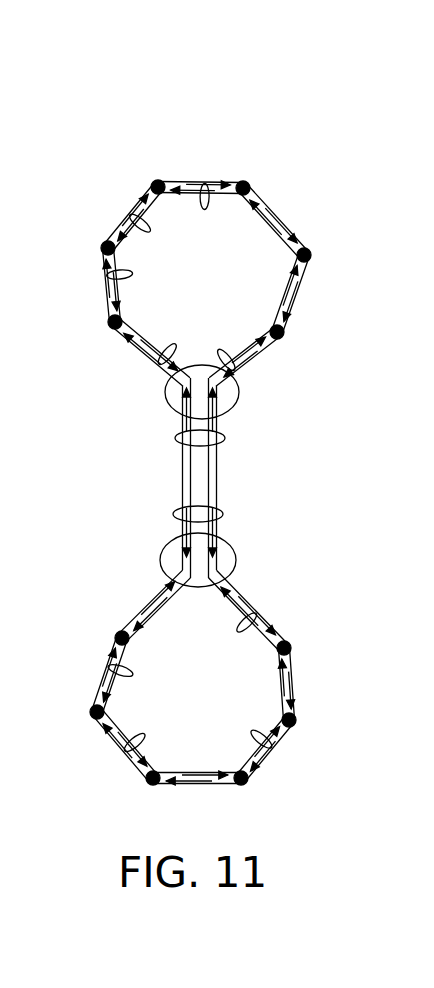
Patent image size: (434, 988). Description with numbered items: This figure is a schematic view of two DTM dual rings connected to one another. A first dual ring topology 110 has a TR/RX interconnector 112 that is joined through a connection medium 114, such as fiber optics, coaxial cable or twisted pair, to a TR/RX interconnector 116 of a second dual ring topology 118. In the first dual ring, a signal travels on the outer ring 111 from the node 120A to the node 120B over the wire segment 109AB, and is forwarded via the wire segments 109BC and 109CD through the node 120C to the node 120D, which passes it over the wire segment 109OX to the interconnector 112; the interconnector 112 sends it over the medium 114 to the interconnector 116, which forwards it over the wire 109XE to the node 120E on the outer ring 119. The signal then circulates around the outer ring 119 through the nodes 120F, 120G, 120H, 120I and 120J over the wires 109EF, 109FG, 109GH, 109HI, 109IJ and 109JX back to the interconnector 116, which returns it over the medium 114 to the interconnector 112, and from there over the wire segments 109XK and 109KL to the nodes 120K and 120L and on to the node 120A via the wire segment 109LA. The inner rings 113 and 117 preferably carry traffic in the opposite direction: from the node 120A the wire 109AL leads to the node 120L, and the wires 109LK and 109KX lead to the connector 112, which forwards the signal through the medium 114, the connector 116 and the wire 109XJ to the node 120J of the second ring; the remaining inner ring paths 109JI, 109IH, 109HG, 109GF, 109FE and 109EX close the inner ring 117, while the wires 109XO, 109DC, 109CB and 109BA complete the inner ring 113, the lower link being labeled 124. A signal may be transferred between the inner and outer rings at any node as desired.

The first dual ring topology 110 is at (292, 195).
The outer ring 111 is at (304, 277).
The TR/RX interconnector 112 is at (167, 402).
The inner ring 113 is at (265, 220).
The connection medium 114 is at (182, 466).
The TR/RX interconnector 116 is at (168, 542).
The inner ring 117 is at (113, 677).
The second dual ring topology 118 is at (327, 671).
The outer ring 119 is at (294, 662).
The link between hub node and node 120J 124 is at (170, 588).
The node 120A is at (154, 182).
The node 120B is at (243, 182).
The node 120C is at (311, 254).
The node 120D is at (281, 333).
The node 120E is at (287, 645).
The node 120F is at (296, 723).
The node 120G is at (247, 782).
The node 120H is at (148, 783).
The node 120I is at (93, 713).
The node 120J is at (117, 635).
The node 120K is at (113, 323).
The node 120L is at (103, 245).
The wire segment 109LA is at (128, 203).
The wire 109AL is at (133, 217).
The wire segment 109AB is at (203, 197).
The wire segment 109BA is at (182, 178).
The wire segment 109BC is at (263, 197).
The wire segment 109CB is at (275, 235).
The wire segment 109CD is at (297, 298).
The wire segment 109DC is at (282, 298).
The wire segment 109OX is at (267, 350).
The wire segment 109XO is at (247, 380).
The wire segment 109XK is at (138, 350).
The wire 109KX is at (173, 355).
The wire segment 109KL is at (103, 278).
The wire 109LK is at (133, 275).
The wire 109XJ is at (148, 613).
The wire 109JX is at (128, 625).
The wire 109JI is at (113, 677).
The wire 109IJ is at (100, 667).
The wire 109IH is at (135, 745).
The wire 109HI is at (140, 732).
The wire 109HG is at (193, 767).
The wire 109GH is at (192, 788).
The wire 109GF is at (277, 750).
The wire 109FG is at (289, 735).
The wire 109FE is at (281, 702).
The wire 109EF is at (301, 685).
The wire 109EX is at (265, 622).
The wire 109XE is at (237, 583).